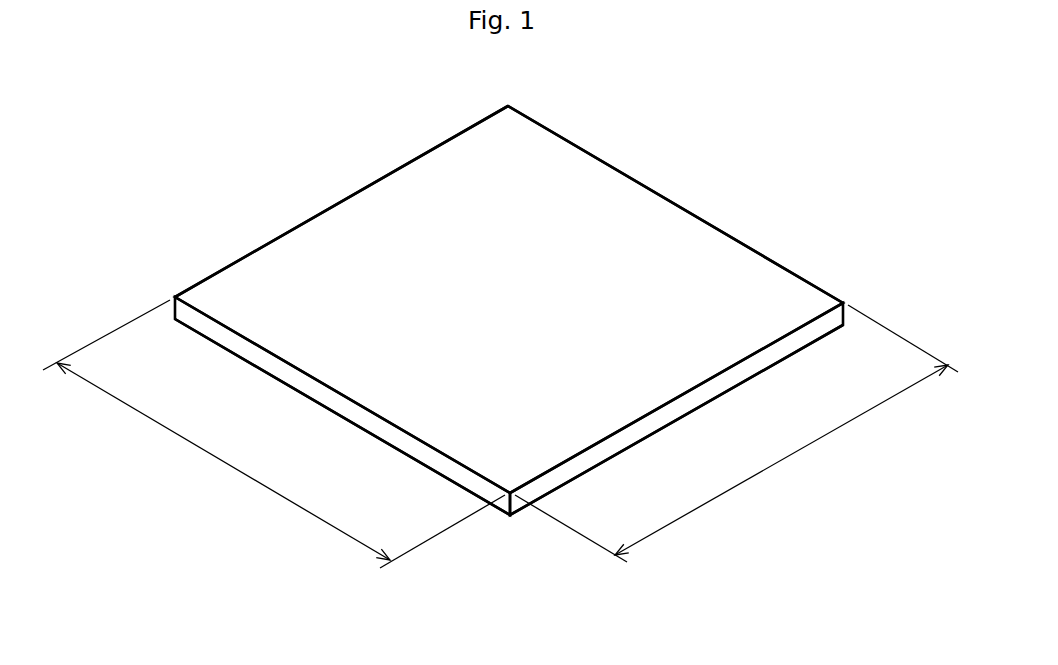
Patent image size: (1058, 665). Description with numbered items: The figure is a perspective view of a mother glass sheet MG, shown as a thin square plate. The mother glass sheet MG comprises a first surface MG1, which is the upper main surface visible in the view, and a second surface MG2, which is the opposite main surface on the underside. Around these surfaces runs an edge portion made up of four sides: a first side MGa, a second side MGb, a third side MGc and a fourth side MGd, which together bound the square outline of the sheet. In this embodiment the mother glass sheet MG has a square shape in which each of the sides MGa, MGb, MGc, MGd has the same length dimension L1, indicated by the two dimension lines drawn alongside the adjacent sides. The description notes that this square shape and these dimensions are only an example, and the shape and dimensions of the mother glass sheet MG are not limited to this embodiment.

The mother glass sheet MG is at (509, 297).
The first surface MG1 is at (390, 405).
The second surface MG2 is at (387, 443).
The first side MGa is at (280, 362).
The second side MGb is at (610, 438).
The third side MGc is at (710, 224).
The fourth side MGd is at (313, 215).
The length dimension L1 is at (500, 434).